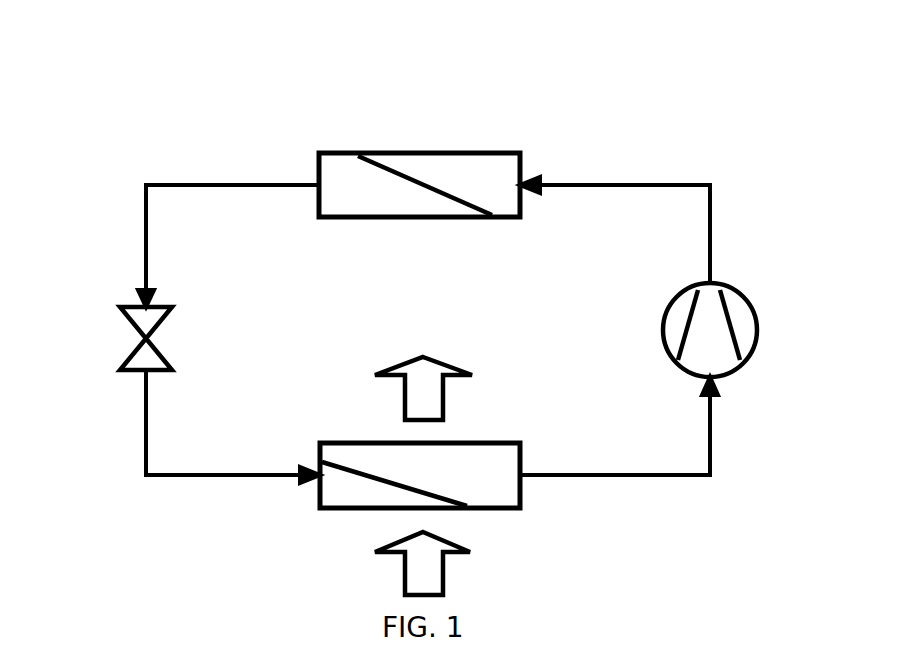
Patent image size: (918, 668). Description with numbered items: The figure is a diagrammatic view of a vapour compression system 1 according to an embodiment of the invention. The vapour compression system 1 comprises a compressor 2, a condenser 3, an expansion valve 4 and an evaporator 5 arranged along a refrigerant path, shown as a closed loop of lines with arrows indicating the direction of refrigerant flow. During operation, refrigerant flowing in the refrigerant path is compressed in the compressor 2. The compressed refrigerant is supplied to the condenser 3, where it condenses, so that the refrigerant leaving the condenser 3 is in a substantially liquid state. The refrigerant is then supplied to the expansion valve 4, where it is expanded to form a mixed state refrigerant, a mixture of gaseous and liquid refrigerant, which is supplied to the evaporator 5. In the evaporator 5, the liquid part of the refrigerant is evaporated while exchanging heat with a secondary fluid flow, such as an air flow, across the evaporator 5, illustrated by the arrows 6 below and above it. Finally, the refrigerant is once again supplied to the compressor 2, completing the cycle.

The vapour compression system 1 is at (107, 85).
The compressor 2 is at (737, 320).
The condenser 3 is at (427, 173).
The expansion valve 4 is at (148, 317).
The evaporator 5 is at (365, 452).
The arrows 6 is at (420, 398).